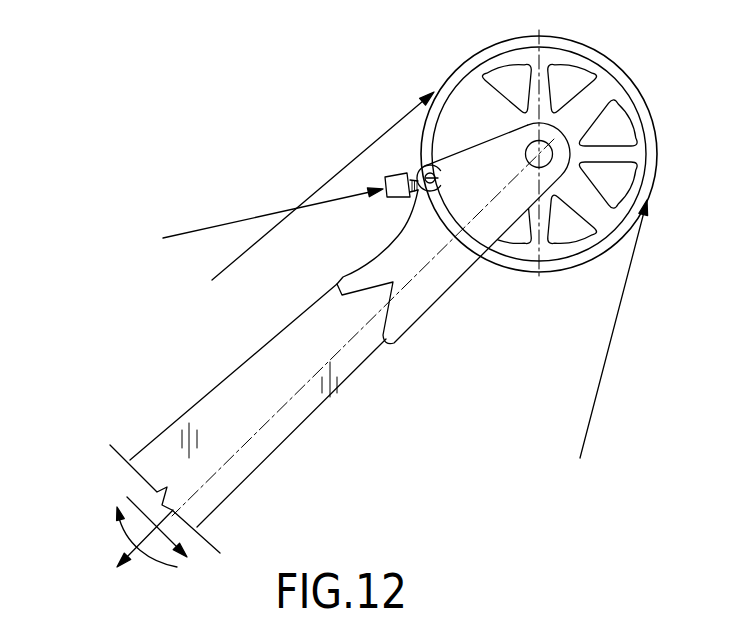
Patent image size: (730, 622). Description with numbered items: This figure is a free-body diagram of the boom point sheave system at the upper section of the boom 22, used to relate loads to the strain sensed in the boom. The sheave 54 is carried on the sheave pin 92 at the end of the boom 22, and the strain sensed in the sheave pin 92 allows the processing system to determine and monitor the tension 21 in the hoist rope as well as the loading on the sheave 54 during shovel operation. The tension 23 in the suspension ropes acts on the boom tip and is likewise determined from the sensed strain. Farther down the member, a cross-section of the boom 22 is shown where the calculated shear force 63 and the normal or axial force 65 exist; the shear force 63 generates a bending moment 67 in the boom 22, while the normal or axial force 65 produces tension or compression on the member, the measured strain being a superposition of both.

The sheave 54 is at (647, 123).
The sheave pin 92 is at (565, 173).
The boom 22 is at (222, 382).
The tension in the suspension ropes 23 is at (227, 225).
The tension in the hoist rope 21 is at (230, 263).
The shear force 63 is at (143, 508).
The normal or axial force 65 is at (127, 552).
The bending moment 67 is at (130, 533).